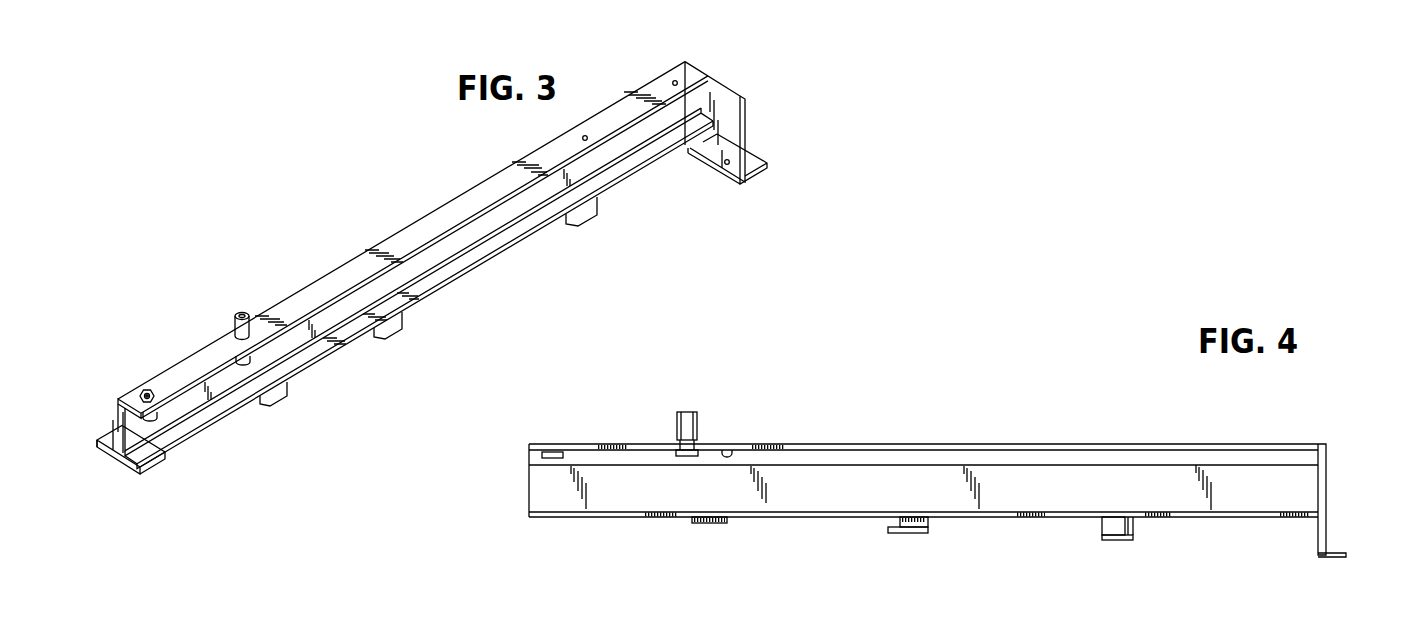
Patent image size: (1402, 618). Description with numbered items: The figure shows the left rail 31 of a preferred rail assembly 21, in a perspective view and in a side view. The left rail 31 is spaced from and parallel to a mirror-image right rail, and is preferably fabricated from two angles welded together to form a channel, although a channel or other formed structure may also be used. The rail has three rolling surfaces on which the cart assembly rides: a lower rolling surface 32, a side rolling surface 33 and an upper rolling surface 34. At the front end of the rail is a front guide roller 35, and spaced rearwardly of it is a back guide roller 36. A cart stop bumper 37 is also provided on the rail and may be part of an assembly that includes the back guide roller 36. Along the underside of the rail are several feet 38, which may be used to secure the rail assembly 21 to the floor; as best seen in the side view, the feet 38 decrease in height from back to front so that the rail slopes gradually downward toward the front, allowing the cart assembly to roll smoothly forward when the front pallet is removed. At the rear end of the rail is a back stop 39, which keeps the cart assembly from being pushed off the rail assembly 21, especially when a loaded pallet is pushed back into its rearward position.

In FIG. 3, the rail assembly 21 is at (427, 282).
In FIG. 4, the rail assembly 21 is at (929, 466).
In FIG. 3, the left rail 31 is at (402, 242).
In FIG. 4, the left rail 31 is at (848, 444).
In FIG. 3, the lower rolling surface 32 is at (340, 338).
In FIG. 4, the lower rolling surface 32 is at (923, 516).
In FIG. 3, the side rolling surface 33 is at (433, 253).
In FIG. 4, the side rolling surface 33 is at (560, 505).
In FIG. 4, the upper rolling surface 34 is at (735, 447).
In FIG. 3, the front guide roller 35 is at (97, 441).
In FIG. 4, the front guide roller 35 is at (542, 453).
In FIG. 3, the back guide roller 36 is at (247, 365).
In FIG. 4, the back guide roller 36 is at (686, 457).
In FIG. 3, the cart stop bumper 37 is at (400, 358).
In FIG. 4, the cart stop bumper 37 is at (680, 415).
In FIG. 3, the feet 38 is at (760, 158).
In FIG. 4, the feet 38 is at (607, 518).
In FIG. 3, the back stop 39 is at (742, 125).
In FIG. 4, the back stop 39 is at (1326, 460).